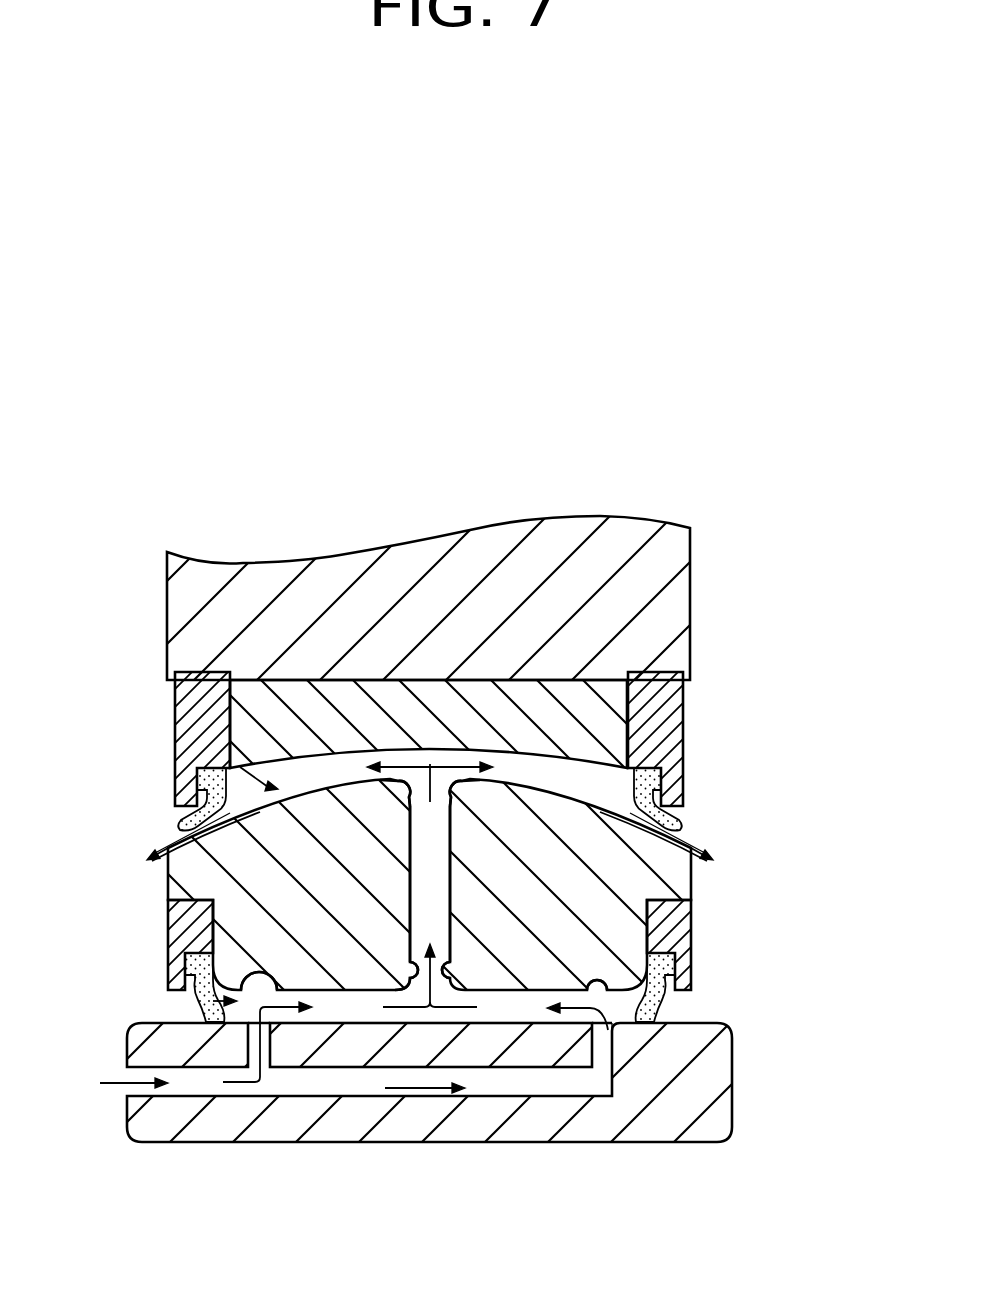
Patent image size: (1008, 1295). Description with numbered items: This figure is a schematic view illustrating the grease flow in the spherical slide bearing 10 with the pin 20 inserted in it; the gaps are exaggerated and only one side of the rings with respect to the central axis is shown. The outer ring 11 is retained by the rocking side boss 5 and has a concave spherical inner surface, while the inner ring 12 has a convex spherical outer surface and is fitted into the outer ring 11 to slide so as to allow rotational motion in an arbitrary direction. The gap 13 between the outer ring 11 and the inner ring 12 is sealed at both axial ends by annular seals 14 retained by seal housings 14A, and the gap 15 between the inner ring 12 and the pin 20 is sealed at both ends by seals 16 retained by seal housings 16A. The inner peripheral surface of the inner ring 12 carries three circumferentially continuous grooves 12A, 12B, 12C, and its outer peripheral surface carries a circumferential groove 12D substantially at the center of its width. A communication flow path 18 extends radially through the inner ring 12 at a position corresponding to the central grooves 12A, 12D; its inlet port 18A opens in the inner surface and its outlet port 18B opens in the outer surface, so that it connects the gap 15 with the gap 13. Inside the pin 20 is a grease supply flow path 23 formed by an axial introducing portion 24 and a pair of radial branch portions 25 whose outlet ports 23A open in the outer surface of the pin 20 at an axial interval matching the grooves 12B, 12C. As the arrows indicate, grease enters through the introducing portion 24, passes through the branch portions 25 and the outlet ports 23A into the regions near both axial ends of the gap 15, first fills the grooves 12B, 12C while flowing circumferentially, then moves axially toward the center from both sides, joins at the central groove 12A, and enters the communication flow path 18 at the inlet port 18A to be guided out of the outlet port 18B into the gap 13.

The rocking side boss 5 is at (682, 553).
The spherical slide bearing 10 is at (820, 776).
The outer ring 11 is at (686, 702).
The inner ring 12 is at (680, 870).
The groove 12A is at (458, 972).
The groove 12B is at (258, 972).
The groove 12C is at (598, 968).
The circumferential groove 12D is at (395, 783).
The gap 13 is at (240, 767).
The annular seal 14 is at (177, 823).
The seal housing 14A is at (173, 712).
The gap 15 is at (215, 1005).
The seal 16 is at (182, 998).
The seal housing 16A is at (168, 920).
The communication flow path 18 is at (450, 886).
The inlet port 18A is at (400, 972).
The outlet port 18B is at (488, 806).
The pin 20 is at (345, 1137).
The grease supply flow path 23 is at (525, 1093).
The outlet port 23A is at (258, 1010).
The introducing portion 24 is at (465, 1093).
The branch portion 25 is at (264, 1030).